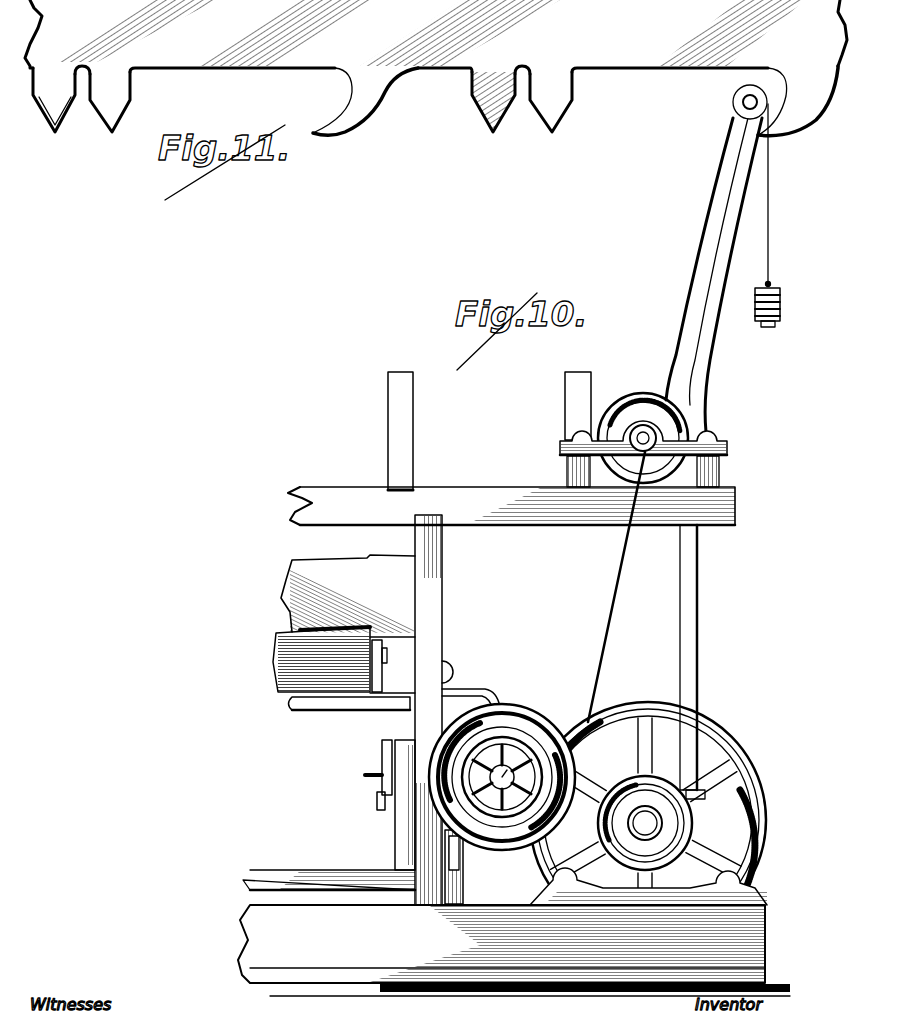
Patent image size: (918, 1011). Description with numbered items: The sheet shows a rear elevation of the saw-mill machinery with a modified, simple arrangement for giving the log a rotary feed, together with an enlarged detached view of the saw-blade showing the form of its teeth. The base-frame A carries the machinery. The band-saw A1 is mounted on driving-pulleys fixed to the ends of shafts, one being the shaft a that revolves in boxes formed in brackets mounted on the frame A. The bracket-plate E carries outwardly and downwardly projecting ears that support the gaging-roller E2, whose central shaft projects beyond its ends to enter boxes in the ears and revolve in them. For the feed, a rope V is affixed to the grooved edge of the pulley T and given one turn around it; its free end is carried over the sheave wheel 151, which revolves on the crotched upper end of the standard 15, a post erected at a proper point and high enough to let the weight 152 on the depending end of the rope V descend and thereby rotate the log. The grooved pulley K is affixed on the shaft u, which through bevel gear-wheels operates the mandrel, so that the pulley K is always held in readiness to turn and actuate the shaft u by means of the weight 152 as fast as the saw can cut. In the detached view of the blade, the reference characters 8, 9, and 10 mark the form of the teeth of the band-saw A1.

In FIG. 11, the notch 8 is at (274, 100).
In FIG. 11, the notch 9 is at (331, 102).
In FIG. 11, the hook 10 is at (575, 101).
In FIG. 11, the band-saw A1 is at (436, 37).
In FIG. 10, the standard 15 is at (697, 366).
In FIG. 10, the sheave wheel 151 is at (742, 103).
In FIG. 10, the weight 152 is at (781, 215).
In FIG. 10, the bracket-plate E is at (348, 594).
In FIG. 10, the gaging-roller E2 is at (276, 666).
In FIG. 10, the grooved pulley K is at (502, 768).
In FIG. 10, the shaft u is at (528, 760).
In FIG. 10, the rope V is at (616, 587).
In FIG. 10, the shaft a is at (645, 823).
In FIG. 10, the pulley T is at (507, 846).
In FIG. 10, the base-frame A is at (514, 950).